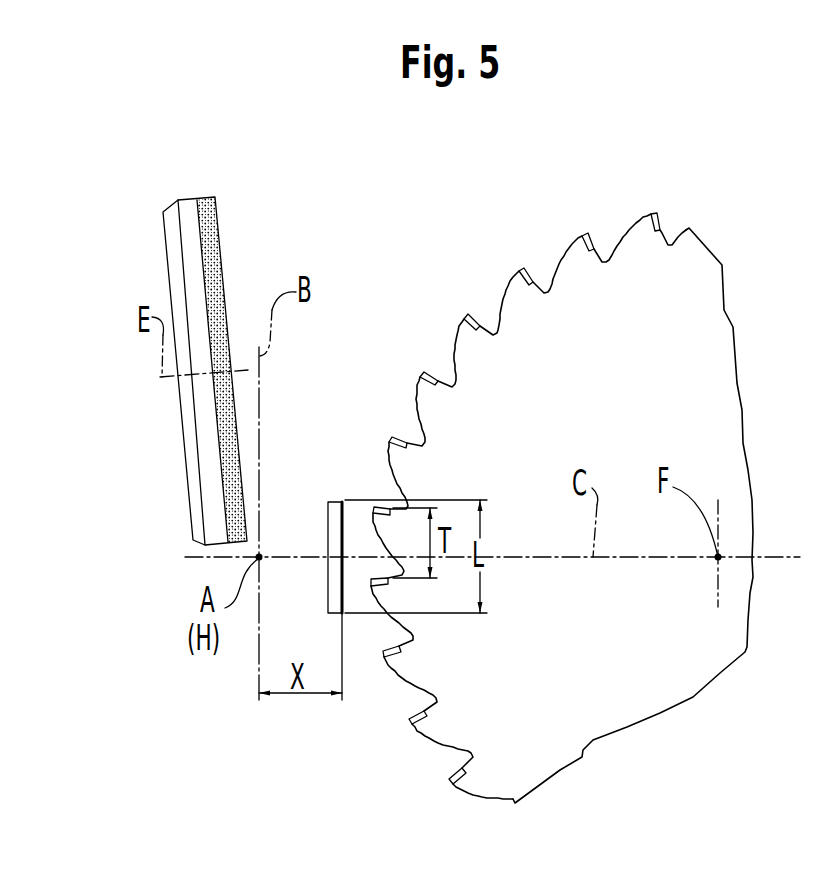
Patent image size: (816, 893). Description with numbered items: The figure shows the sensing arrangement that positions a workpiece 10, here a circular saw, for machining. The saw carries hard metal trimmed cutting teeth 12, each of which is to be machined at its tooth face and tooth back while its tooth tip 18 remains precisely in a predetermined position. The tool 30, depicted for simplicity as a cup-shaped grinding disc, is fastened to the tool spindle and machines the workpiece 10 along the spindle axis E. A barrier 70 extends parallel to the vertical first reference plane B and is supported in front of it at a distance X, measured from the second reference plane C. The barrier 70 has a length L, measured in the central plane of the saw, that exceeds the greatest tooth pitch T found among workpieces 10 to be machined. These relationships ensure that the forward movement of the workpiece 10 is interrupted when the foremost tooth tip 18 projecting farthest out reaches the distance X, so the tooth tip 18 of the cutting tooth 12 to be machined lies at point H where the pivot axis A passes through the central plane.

The workpiece 10 is at (673, 682).
The cutting teeth 12 is at (565, 250).
The tooth tip 18 is at (370, 577).
The tool 30 is at (229, 214).
The barrier 70 is at (333, 501).